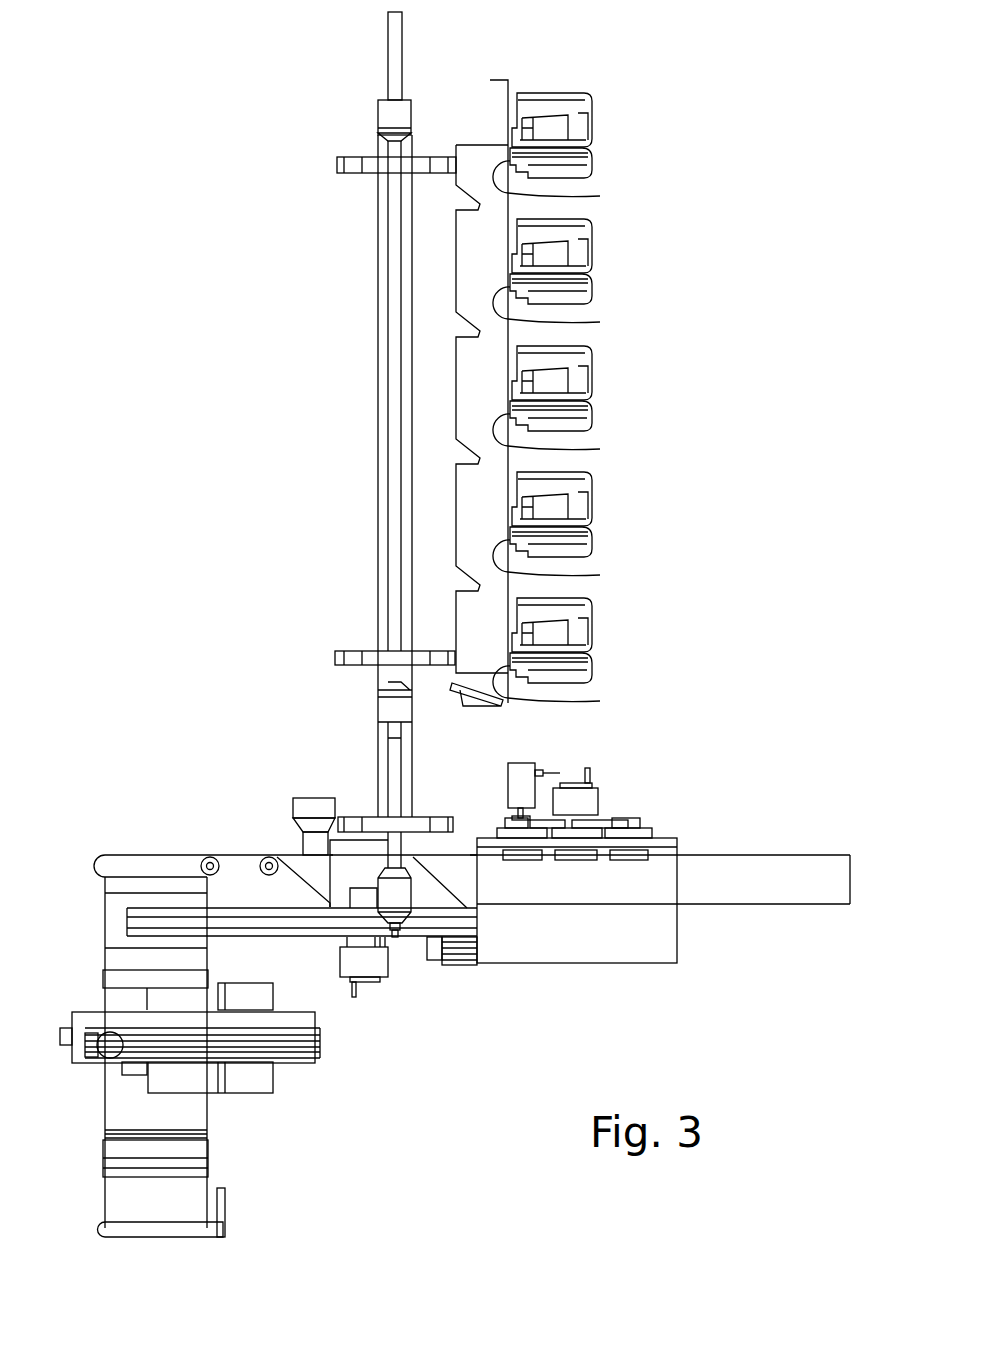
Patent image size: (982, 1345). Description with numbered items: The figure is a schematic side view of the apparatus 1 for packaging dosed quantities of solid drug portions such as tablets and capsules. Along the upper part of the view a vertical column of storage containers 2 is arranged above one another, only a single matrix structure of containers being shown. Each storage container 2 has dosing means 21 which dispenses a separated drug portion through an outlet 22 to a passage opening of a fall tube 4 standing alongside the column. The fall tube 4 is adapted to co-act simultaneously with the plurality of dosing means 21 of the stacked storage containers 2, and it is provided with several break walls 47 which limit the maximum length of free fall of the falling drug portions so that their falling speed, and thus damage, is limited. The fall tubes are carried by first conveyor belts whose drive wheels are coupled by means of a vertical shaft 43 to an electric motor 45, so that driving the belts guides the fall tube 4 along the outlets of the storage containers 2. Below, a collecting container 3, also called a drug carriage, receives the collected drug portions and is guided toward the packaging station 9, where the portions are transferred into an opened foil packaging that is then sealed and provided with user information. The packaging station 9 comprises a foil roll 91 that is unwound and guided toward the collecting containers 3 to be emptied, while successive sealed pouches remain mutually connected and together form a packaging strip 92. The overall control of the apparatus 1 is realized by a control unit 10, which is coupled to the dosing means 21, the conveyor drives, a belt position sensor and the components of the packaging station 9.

The apparatus 1 is at (191, 195).
The storage container 2 is at (596, 127).
The dosing means 21 is at (596, 158).
The outlet 22 is at (600, 196).
The collecting container 3 is at (303, 806).
The fall tube 4 is at (455, 388).
The vertical shaft 43 is at (393, 50).
The electric motor 45 is at (460, 965).
The break wall 47 is at (467, 196).
The packaging station 9 is at (395, 1038).
The control unit 10 is at (252, 1082).
The foil roll 91 is at (172, 1207).
The packaging strip 92 is at (780, 872).